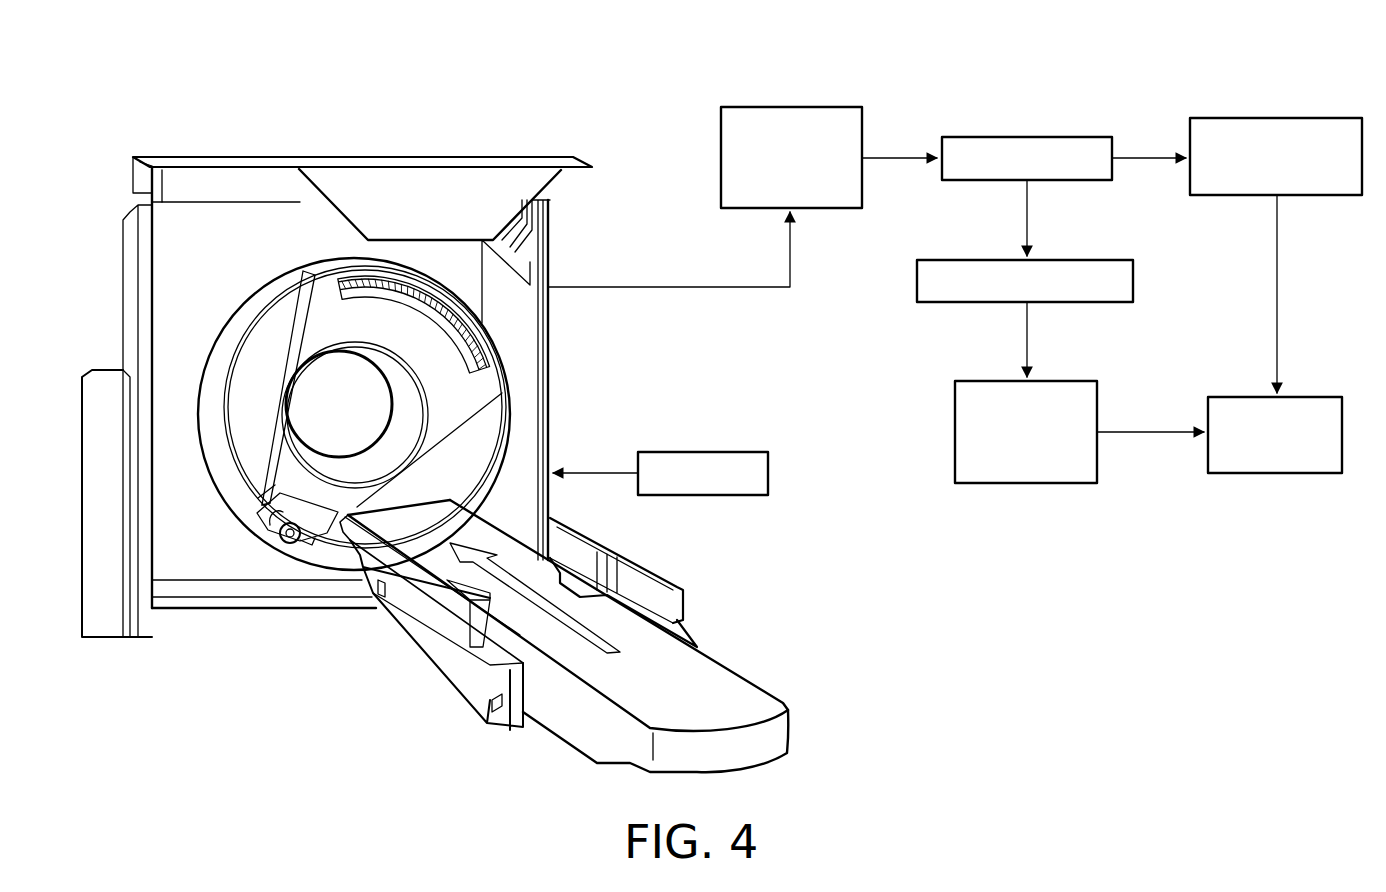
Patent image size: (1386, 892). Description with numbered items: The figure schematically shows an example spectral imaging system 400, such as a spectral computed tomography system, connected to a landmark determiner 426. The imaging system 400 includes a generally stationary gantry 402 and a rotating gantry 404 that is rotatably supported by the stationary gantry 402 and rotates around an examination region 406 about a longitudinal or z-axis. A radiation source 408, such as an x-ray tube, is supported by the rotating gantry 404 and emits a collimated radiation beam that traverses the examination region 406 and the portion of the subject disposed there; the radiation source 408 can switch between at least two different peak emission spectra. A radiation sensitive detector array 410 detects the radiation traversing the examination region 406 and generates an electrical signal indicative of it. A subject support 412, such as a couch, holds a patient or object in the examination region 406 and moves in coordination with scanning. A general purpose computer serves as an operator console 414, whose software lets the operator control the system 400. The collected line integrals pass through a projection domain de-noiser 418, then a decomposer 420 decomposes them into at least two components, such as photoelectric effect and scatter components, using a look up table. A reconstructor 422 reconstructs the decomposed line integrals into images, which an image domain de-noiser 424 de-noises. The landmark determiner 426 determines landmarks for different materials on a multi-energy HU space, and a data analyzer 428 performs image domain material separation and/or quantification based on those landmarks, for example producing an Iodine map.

The spectral imaging system 400 is at (182, 106).
The stationary gantry 402 is at (168, 312).
The rotating gantry 404 is at (323, 322).
The examination region 406 is at (360, 415).
The radiation source 408 is at (281, 548).
The radiation sensitive detector array 410 is at (453, 338).
The subject support 412 is at (720, 700).
The operator console 414 is at (758, 472).
The projection domain de-noiser 418 is at (722, 140).
The decomposer 420 is at (1028, 137).
The reconstructor 422 is at (922, 282).
The image domain de-noiser 424 is at (958, 406).
The landmark determiner 426 is at (1208, 124).
The data analyzer 428 is at (1215, 411).